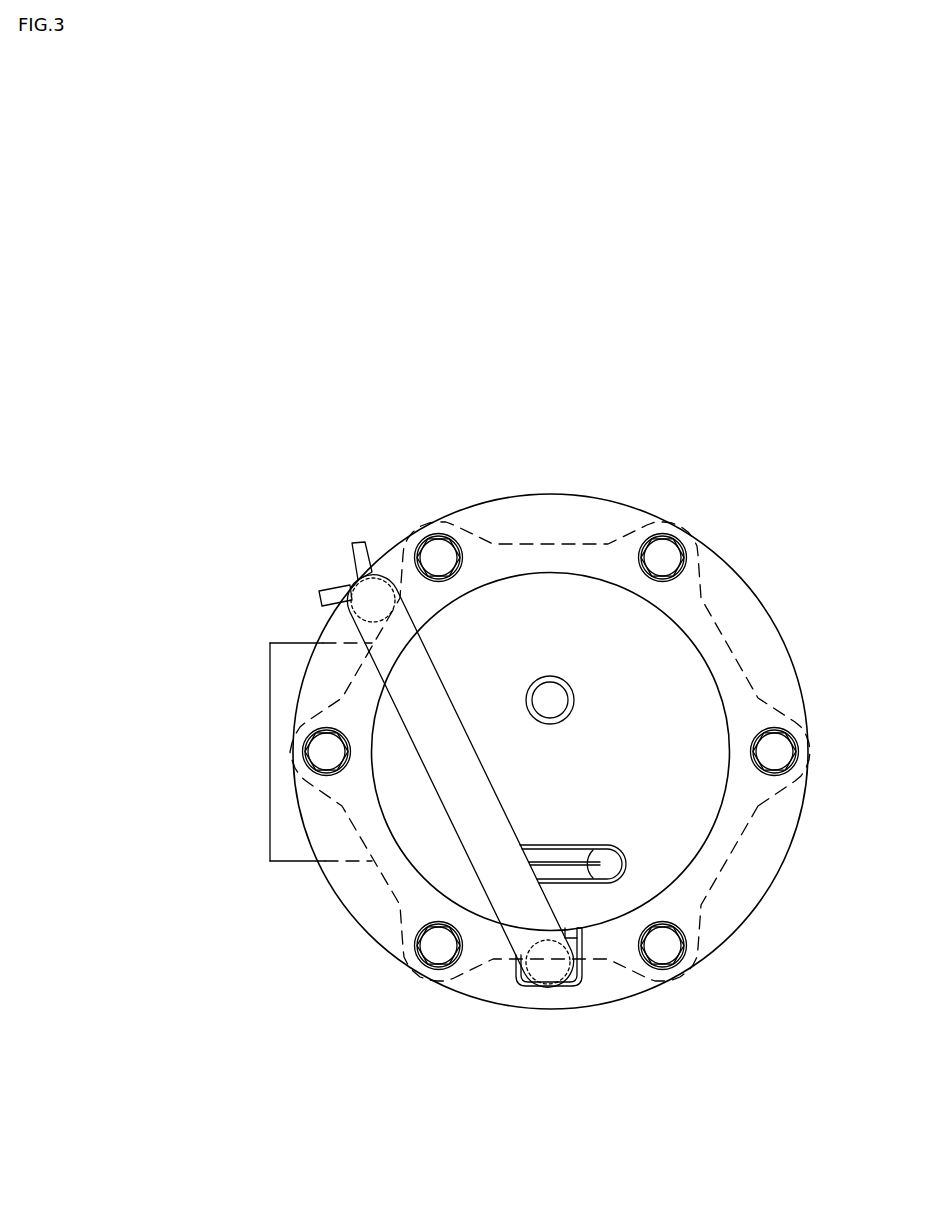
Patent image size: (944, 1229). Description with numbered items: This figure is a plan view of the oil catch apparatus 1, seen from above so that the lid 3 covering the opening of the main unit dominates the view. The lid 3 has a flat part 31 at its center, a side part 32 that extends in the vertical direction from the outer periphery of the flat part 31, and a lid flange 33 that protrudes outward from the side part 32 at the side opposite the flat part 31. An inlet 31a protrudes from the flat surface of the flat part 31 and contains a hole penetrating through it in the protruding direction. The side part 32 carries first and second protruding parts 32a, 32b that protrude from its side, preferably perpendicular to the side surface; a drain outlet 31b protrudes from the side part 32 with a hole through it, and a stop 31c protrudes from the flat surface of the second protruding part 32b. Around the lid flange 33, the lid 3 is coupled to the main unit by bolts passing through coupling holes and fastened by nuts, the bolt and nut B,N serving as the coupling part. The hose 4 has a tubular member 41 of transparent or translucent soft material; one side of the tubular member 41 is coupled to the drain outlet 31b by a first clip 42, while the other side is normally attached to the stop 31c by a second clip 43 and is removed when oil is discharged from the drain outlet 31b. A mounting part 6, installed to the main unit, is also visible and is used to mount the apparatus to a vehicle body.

The oil catch apparatus 1 is at (666, 490).
The lid 3 is at (772, 612).
The hose 4 is at (510, 746).
The mounting part 6 is at (287, 842).
The flat part 31 is at (692, 694).
The inlet 31a is at (570, 683).
The drain outlet 31b is at (590, 987).
The stop 31c is at (400, 612).
The side part 32 is at (720, 817).
The first protruding part 32a is at (517, 977).
The second protruding part 32b is at (349, 606).
The lid flange 33 is at (753, 883).
The tubular member 41 is at (428, 725).
The first clip 42 is at (575, 937).
The second clip 43 is at (364, 560).
The bolt and nut B,N is at (667, 948).